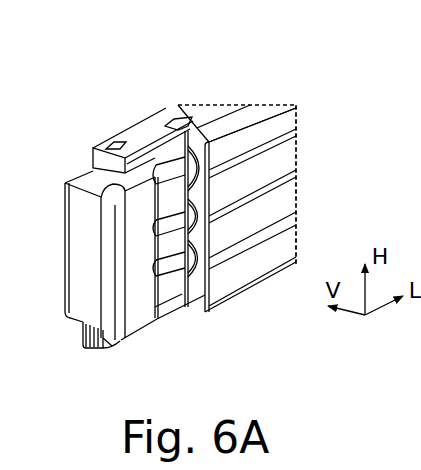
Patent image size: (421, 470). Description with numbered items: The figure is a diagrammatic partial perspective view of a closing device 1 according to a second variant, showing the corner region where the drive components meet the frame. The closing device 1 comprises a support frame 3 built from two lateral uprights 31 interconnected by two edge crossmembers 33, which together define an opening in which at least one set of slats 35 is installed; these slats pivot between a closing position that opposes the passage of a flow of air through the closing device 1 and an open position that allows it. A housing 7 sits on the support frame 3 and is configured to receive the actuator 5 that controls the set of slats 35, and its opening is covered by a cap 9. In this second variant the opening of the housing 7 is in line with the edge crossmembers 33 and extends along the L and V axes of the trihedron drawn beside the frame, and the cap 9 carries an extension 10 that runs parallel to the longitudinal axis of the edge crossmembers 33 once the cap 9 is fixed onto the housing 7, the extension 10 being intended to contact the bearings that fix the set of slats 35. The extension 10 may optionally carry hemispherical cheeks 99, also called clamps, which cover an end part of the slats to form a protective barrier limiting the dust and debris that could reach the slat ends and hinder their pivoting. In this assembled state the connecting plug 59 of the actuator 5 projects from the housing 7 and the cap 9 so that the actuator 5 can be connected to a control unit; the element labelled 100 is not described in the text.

The closing device 1 is at (350, 91).
The support frame 3 is at (265, 100).
The actuator 5 is at (82, 332).
The housing 7 is at (150, 110).
The cap 9 is at (70, 268).
The extension 10 is at (172, 302).
The lateral uprights 31 is at (216, 202).
The edge crossmembers 33 is at (215, 104).
The set of slats 35 is at (300, 184).
The connecting plug 59 is at (88, 352).
The hemispherical cheeks 99 is at (214, 276).
The recess 100 is at (115, 141).